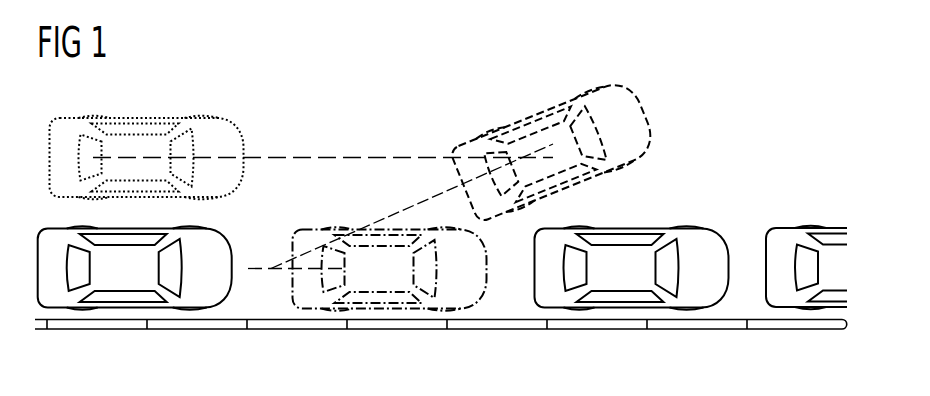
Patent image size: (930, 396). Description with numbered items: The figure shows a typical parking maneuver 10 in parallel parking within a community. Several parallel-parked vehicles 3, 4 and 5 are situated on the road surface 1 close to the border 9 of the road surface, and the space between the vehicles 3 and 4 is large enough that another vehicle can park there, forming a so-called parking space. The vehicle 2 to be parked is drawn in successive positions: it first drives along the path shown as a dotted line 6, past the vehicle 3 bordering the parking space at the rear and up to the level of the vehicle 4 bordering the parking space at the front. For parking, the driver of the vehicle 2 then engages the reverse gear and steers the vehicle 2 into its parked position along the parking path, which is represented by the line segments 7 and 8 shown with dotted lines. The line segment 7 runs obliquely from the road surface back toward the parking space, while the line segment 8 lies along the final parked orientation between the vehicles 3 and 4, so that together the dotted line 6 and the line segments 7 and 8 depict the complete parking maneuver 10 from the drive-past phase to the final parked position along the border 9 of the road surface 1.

The road surface 1 is at (762, 308).
The vehicle 2 is at (158, 120).
The vehicle 3 is at (228, 233).
The vehicle 4 is at (654, 232).
The vehicle 5 is at (778, 230).
The dotted line 6 is at (273, 156).
The line segment 7 is at (398, 212).
The line segment 8 is at (305, 271).
The border of the road surface 9 is at (397, 319).
The parking maneuver 10 is at (717, 87).